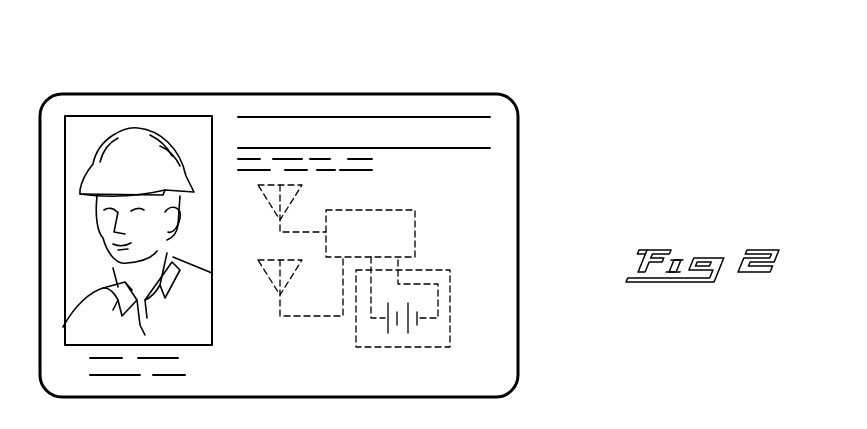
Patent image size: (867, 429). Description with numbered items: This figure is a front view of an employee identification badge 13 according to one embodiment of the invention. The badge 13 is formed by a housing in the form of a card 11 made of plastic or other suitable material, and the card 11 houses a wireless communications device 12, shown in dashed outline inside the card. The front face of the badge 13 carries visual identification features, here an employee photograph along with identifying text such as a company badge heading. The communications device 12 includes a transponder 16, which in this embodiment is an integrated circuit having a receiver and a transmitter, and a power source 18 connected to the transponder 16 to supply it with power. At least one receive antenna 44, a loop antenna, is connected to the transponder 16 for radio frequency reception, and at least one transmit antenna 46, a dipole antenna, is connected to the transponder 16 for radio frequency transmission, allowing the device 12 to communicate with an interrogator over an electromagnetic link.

The card 11 is at (482, 346).
The wireless communications device 12 is at (483, 221).
The employee identification badge 13 is at (483, 72).
The transponder 16 is at (420, 232).
The power source 18 is at (455, 307).
The receive antenna 44 is at (265, 196).
The transmit antenna 46 is at (265, 277).